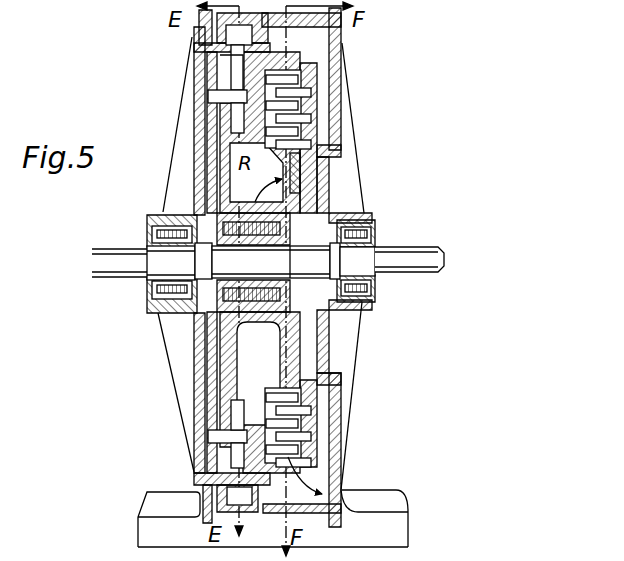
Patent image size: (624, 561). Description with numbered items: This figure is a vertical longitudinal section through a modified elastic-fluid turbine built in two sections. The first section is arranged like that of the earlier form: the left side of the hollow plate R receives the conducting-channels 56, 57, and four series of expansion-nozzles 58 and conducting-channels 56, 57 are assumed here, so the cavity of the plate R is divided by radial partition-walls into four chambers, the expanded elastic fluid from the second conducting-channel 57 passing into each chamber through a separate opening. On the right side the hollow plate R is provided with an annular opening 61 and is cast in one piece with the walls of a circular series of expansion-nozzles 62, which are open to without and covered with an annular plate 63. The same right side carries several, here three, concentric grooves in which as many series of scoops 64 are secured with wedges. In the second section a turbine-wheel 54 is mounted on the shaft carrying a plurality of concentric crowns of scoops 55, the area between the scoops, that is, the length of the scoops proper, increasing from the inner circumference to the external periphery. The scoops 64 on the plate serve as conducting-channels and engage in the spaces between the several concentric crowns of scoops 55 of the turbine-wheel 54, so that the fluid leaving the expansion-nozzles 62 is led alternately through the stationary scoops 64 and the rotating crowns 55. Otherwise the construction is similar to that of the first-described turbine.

The turbine-wheel 54 is at (308, 197).
The concentric crowns of scoops 55 is at (290, 82).
The conducting-channel 56 is at (220, 108).
The second conducting-channel 57 is at (221, 463).
The expansion-nozzles 58 is at (221, 59).
The annular opening 61 is at (243, 390).
The expansion-nozzles 62 is at (300, 174).
The annular plate 63 is at (302, 371).
The scoops 64 is at (317, 409).